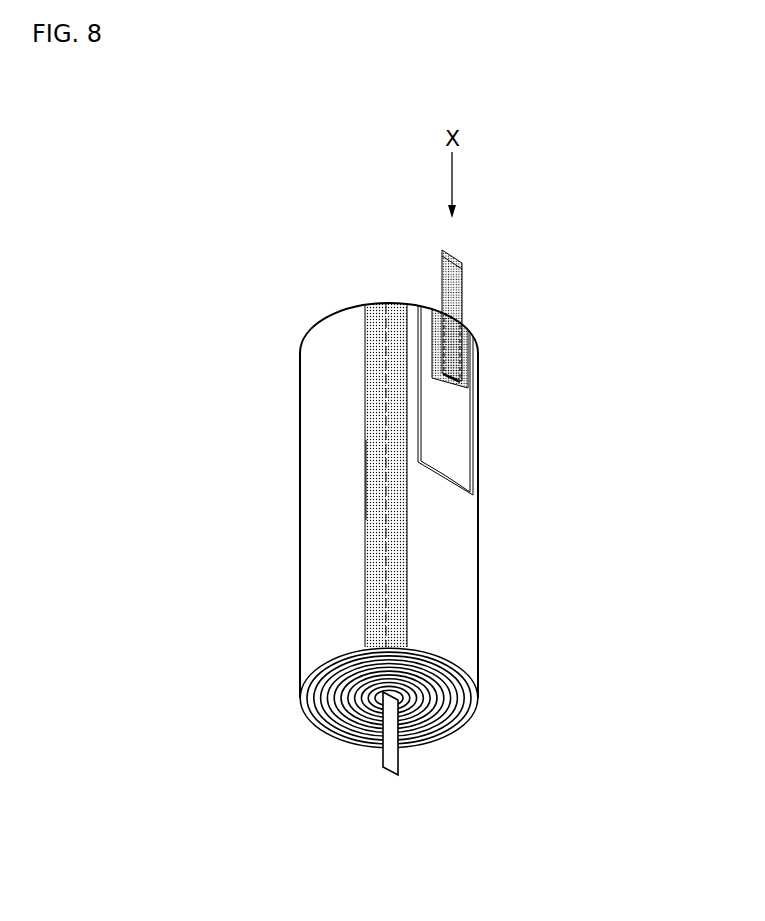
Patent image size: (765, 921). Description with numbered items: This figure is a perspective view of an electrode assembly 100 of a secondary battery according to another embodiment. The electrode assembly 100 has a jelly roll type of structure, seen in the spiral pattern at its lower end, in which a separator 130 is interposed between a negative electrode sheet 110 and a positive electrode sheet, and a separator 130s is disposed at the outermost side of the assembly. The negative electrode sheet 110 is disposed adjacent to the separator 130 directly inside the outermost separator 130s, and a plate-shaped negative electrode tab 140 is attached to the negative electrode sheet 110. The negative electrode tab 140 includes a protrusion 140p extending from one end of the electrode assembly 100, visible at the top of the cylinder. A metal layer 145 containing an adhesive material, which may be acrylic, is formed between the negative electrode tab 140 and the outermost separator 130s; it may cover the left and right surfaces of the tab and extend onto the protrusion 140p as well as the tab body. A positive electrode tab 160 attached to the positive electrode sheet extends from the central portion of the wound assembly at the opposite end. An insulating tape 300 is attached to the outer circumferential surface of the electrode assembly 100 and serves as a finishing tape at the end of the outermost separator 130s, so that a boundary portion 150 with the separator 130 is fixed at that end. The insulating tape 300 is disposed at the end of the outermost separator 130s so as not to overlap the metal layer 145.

The electrode assembly 100 is at (613, 682).
The negative electrode sheet 110 is at (417, 350).
The separator 130 is at (427, 733).
The outermost separator 130s is at (467, 538).
The negative electrode tab 140 is at (447, 346).
The protrusion 140p is at (462, 263).
The metal layer 145 is at (468, 338).
The boundary portion 150 is at (386, 415).
The positive electrode tab 160 is at (382, 768).
The insulating tape 300 is at (372, 462).